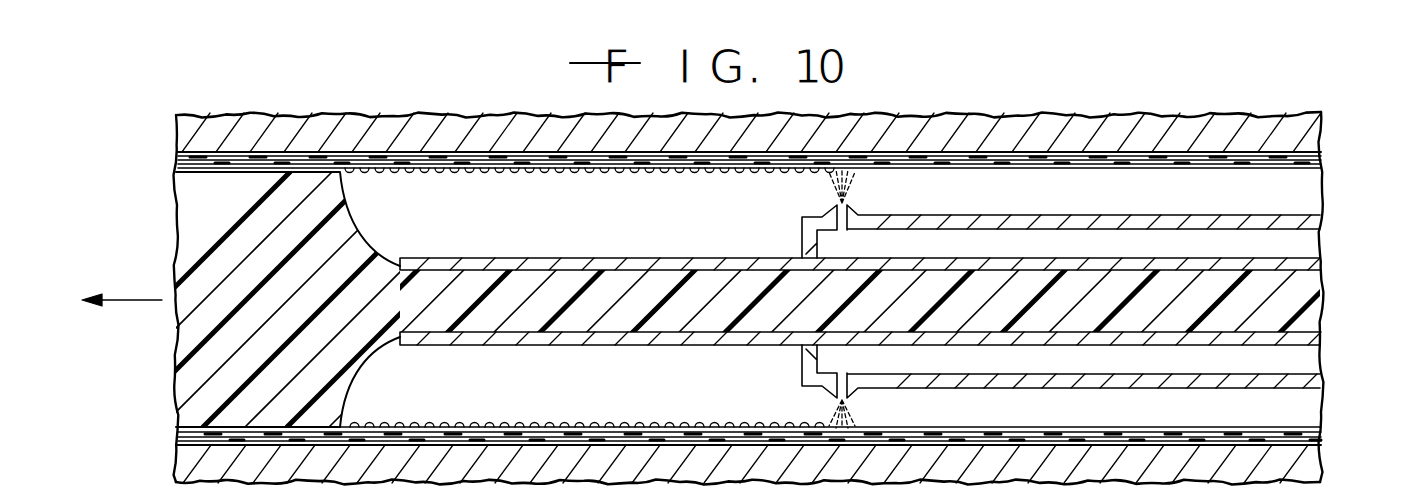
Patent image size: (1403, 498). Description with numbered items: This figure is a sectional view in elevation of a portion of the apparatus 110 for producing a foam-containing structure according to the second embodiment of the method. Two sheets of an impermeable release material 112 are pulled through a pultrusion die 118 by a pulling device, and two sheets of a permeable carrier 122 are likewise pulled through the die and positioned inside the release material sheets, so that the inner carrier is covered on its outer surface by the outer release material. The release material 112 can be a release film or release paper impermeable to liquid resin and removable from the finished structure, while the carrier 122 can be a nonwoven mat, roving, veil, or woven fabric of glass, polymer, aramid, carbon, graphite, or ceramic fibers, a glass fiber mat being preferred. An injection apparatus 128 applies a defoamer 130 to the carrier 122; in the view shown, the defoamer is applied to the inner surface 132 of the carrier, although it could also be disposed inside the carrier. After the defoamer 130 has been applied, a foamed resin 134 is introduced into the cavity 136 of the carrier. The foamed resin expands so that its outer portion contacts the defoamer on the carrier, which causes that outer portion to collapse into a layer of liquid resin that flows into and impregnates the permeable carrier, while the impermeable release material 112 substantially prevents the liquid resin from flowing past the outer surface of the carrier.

The apparatus 110 is at (712, 262).
The impermeable release material 112 is at (1326, 158).
The pultrusion die 118 is at (1102, 133).
The permeable carrier 122 is at (1360, 159).
The injection apparatus 128 is at (982, 215).
The defoamer 130 is at (798, 170).
The inner surface 132 is at (1223, 165).
The foamed resin 134 is at (330, 352).
The cavity 136 is at (1290, 410).